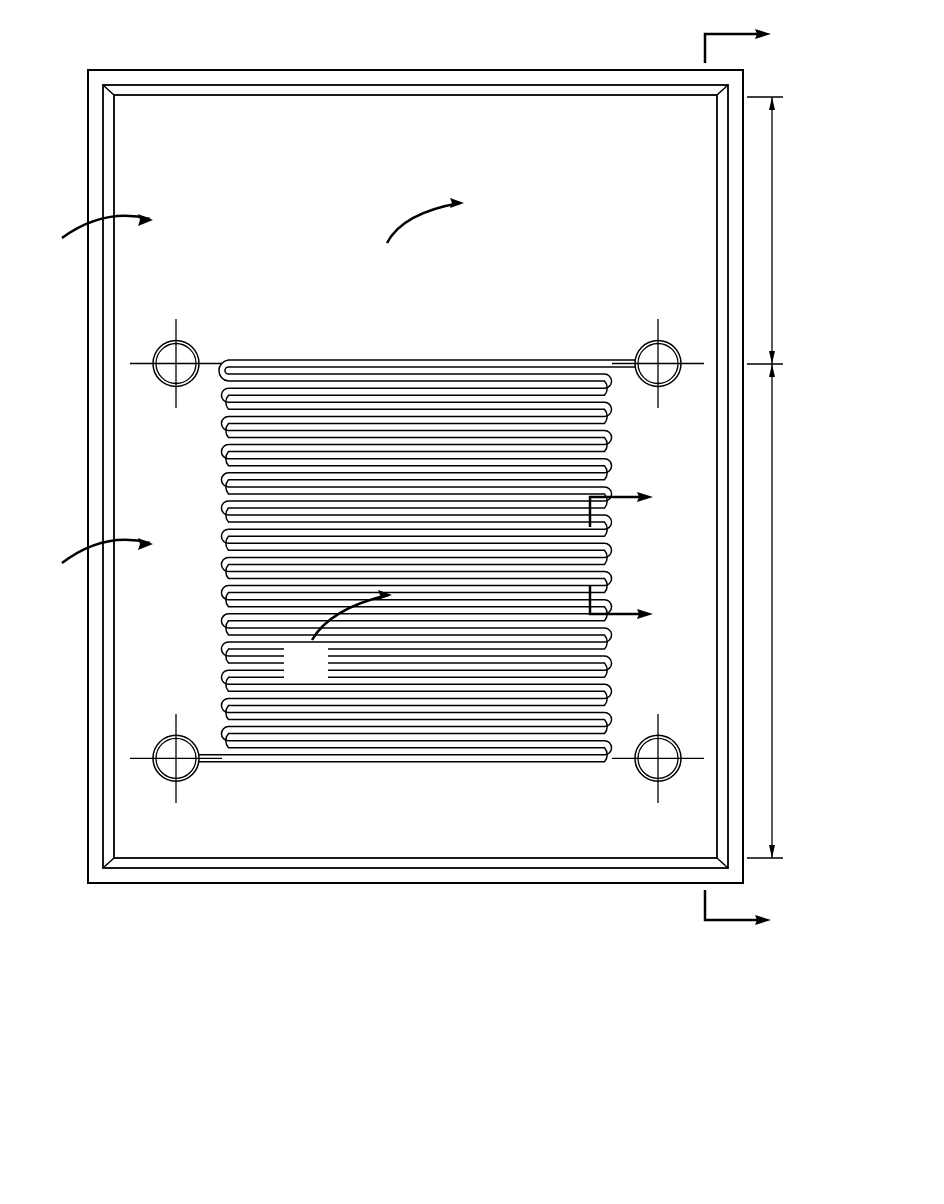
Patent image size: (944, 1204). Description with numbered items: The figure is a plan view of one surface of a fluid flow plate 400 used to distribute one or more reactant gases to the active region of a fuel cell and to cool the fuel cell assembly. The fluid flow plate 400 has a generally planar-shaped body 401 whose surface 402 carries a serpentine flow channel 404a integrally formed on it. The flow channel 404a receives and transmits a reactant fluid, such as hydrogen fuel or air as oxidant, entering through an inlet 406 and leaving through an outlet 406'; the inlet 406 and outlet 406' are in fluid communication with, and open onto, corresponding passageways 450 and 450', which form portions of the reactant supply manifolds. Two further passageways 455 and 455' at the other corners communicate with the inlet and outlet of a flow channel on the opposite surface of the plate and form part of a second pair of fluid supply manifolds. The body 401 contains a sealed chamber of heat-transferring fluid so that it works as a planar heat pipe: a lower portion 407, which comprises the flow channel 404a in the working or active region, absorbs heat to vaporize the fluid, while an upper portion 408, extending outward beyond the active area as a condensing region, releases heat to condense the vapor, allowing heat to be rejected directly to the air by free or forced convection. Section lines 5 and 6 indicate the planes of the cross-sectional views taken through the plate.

The fluid flow plate 400 is at (118, 36).
The planar-shaped body 401 is at (198, 72).
The surface 402 is at (593, 120).
The flow channel 404a is at (462, 367).
The inlet 406 is at (676, 405).
The outlet 406' is at (162, 801).
The lower portion 407 is at (84, 557).
The upper portion 408 is at (84, 233).
The passageway 450 is at (661, 344).
The passageway 450' is at (176, 741).
The passageway 455 is at (176, 344).
The passageway 455' is at (660, 741).
The section line 5- 5 is at (750, 477).
The section line 6- 6 is at (634, 556).